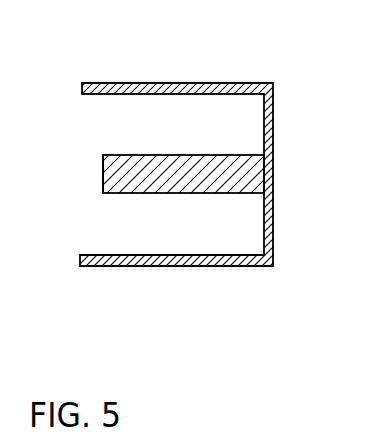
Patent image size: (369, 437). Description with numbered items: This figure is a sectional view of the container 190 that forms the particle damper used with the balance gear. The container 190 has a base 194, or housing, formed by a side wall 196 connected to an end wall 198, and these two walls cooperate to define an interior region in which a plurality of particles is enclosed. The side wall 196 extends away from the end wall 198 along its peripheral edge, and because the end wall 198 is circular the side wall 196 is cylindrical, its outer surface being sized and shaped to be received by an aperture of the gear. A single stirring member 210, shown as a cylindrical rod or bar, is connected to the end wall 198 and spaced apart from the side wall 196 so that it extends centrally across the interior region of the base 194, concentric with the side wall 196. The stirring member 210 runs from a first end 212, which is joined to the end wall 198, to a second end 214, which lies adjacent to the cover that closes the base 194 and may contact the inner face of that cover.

The container 190 is at (176, 133).
The base 194 is at (222, 58).
The side wall 196 is at (205, 266).
The end wall 198 is at (275, 256).
The stirring member 210 is at (186, 155).
The first end 212 is at (258, 185).
The second end 214 is at (103, 180).